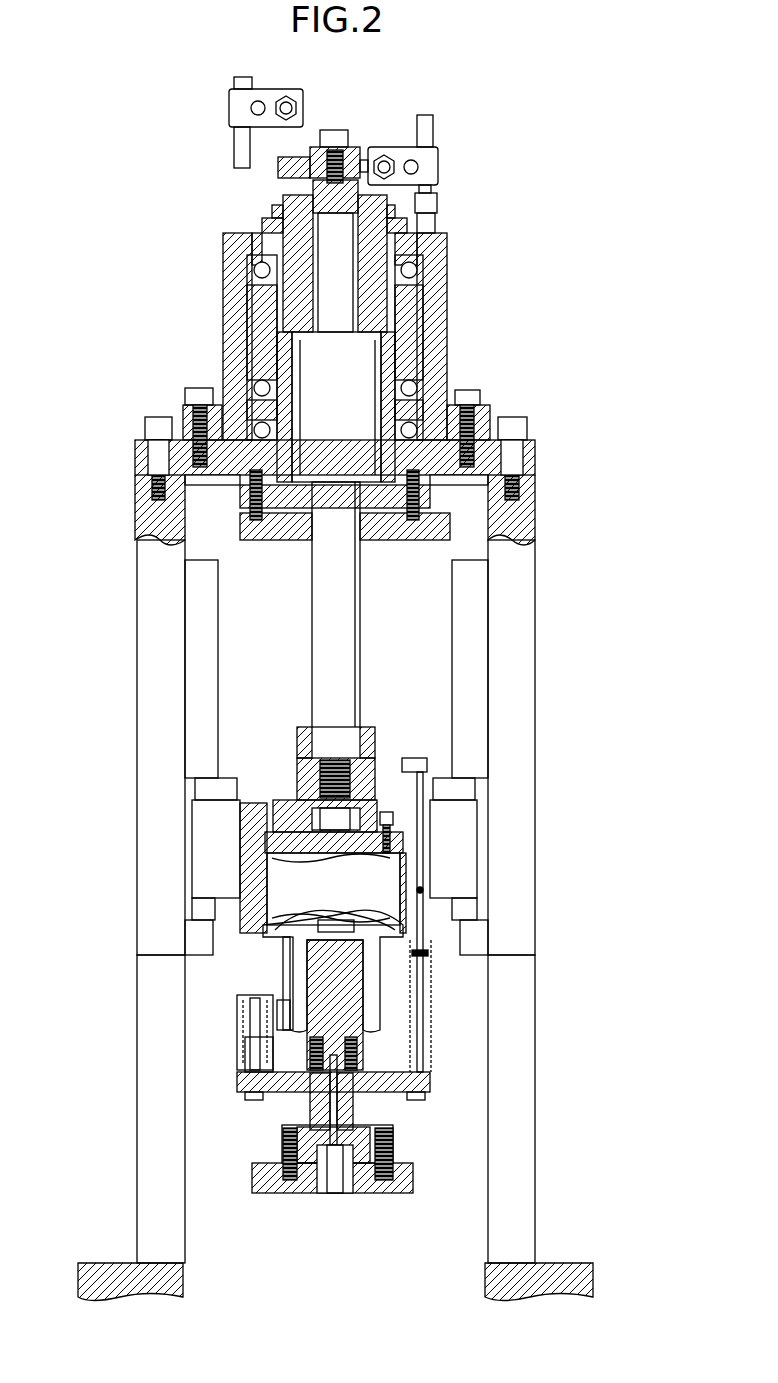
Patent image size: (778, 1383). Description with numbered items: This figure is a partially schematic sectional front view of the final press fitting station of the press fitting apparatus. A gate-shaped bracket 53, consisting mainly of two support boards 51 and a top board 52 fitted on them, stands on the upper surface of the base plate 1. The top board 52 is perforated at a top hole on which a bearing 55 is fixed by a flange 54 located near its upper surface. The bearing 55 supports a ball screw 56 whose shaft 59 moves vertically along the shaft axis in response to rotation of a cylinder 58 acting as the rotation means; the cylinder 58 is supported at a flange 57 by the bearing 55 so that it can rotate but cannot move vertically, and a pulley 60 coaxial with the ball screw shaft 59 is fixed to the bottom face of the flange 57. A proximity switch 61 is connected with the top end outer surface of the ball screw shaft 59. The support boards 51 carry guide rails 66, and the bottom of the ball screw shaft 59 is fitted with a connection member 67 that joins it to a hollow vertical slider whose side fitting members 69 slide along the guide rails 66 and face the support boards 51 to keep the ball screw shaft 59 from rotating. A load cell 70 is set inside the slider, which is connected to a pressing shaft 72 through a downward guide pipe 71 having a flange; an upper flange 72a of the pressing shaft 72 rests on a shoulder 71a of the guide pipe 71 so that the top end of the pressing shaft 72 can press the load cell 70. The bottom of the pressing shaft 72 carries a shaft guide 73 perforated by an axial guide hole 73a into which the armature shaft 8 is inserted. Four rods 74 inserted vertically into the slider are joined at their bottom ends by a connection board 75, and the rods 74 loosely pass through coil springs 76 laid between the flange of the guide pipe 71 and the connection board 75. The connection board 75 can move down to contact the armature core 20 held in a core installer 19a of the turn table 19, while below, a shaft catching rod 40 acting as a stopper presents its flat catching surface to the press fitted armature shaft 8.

The base plate 1 is at (578, 1277).
The armature shaft 8 is at (310, 1095).
The turn table 19 is at (410, 1178).
The core installer 19a is at (283, 1150).
The armature core 20 is at (370, 1125).
The shaft catching rod 40 is at (333, 1190).
The support boards 51 is at (137, 878).
The top board 52 is at (535, 453).
The gate-shaped bracket 53 is at (535, 620).
The flange 54 is at (478, 412).
The bearing 55 is at (440, 345).
The ball screw 56 is at (262, 336).
The flange 57 is at (190, 522).
The cylinder 58 is at (330, 362).
The ball screw shaft 59 is at (350, 628).
The pulley 60 is at (235, 543).
The proximity switch 61 is at (384, 160).
The guide rails 66 is at (208, 668).
The connection member 67 is at (297, 782).
The fitting members 69 is at (463, 830).
The load cell 70 is at (385, 882).
The guide pipe 71 is at (370, 988).
The shoulder 71a is at (246, 983).
The pressing shaft 72 is at (350, 1010).
The upper flange 72a is at (237, 1013).
The shaft guide 73 is at (265, 1073).
The guide hole 73a is at (420, 897).
The rods 74 is at (405, 780).
The connection board 75 is at (390, 1093).
The coil springs 76 is at (245, 1078).